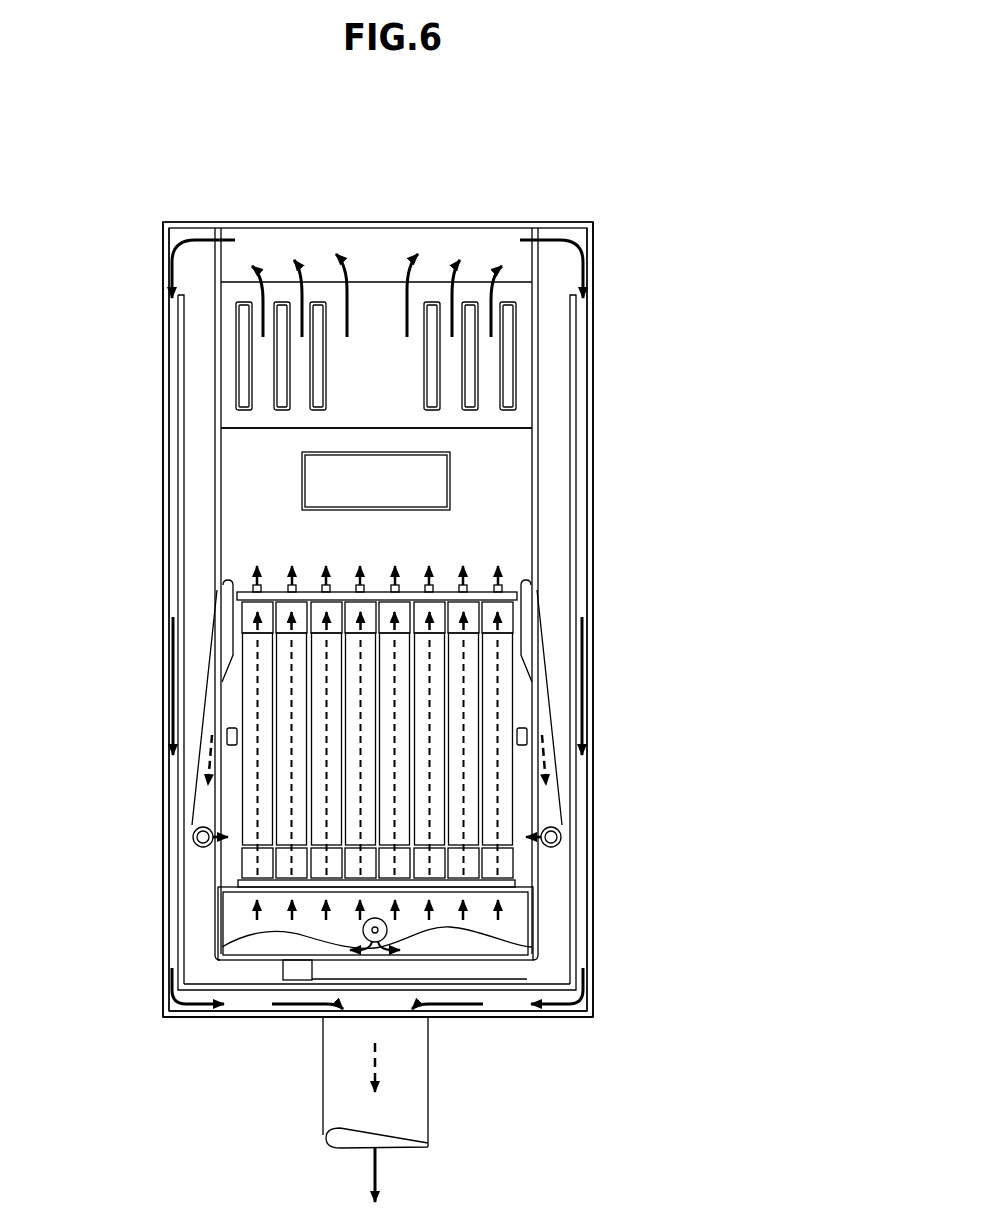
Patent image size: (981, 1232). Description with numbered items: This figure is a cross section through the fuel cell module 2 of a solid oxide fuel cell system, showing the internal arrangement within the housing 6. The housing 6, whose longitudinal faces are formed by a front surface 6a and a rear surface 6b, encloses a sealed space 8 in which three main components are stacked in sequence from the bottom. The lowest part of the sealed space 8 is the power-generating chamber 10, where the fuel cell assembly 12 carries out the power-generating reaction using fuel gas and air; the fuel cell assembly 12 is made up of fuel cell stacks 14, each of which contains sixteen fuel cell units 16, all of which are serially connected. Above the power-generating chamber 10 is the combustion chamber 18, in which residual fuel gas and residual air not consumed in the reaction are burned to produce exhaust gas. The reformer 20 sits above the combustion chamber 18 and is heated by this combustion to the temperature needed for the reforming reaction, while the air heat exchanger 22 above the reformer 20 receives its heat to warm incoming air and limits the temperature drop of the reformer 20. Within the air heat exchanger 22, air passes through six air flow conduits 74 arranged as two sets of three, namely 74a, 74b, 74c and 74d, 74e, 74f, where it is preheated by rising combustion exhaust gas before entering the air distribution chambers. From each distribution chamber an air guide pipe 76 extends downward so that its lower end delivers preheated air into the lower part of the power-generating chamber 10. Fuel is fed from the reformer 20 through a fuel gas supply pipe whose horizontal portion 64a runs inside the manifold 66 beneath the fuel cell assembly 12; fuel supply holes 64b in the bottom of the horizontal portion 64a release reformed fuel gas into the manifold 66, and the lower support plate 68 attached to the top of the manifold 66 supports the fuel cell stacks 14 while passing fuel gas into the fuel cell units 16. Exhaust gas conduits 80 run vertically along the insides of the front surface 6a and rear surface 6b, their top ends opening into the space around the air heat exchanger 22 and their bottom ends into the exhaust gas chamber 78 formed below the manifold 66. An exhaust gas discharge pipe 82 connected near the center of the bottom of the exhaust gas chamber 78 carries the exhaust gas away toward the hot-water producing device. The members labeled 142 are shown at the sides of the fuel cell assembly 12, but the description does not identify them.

The fuel cell module 2 is at (678, 280).
The housing 6 is at (381, 664).
The front surface 6a is at (163, 468).
The rear surface 6b is at (593, 445).
The sealed space 8 is at (267, 491).
The power-generating chamber 10 is at (275, 688).
The fuel cell assembly 12 is at (416, 740).
The fuel cell stack 14 is at (416, 740).
The fuel cell unit 16 is at (416, 740).
The combustion chamber 18 is at (392, 550).
The reformer 20 is at (450, 483).
The air heat exchanger 22 is at (467, 259).
The air flow conduits 74 is at (376, 250).
The air flow conduit 74a is at (233, 302).
The air flow conduit 74b is at (274, 302).
The air flow conduit 74c is at (321, 302).
The air flow conduit 74d is at (430, 302).
The air flow conduit 74e is at (474, 302).
The air flow conduit 74f is at (514, 302).
The horizontal portion 64a is at (388, 930).
The fuel supply holes 64b is at (222, 947).
The manifold 66 is at (535, 912).
The lower support plate 68 is at (518, 886).
The air guide pipe 76 is at (204, 800).
The exhaust gas chamber 78 is at (570, 1012).
The exhaust gas conduits 80 is at (178, 582).
The exhaust gas discharge pipe 82 is at (428, 1090).
The fixing member 142 is at (227, 736).